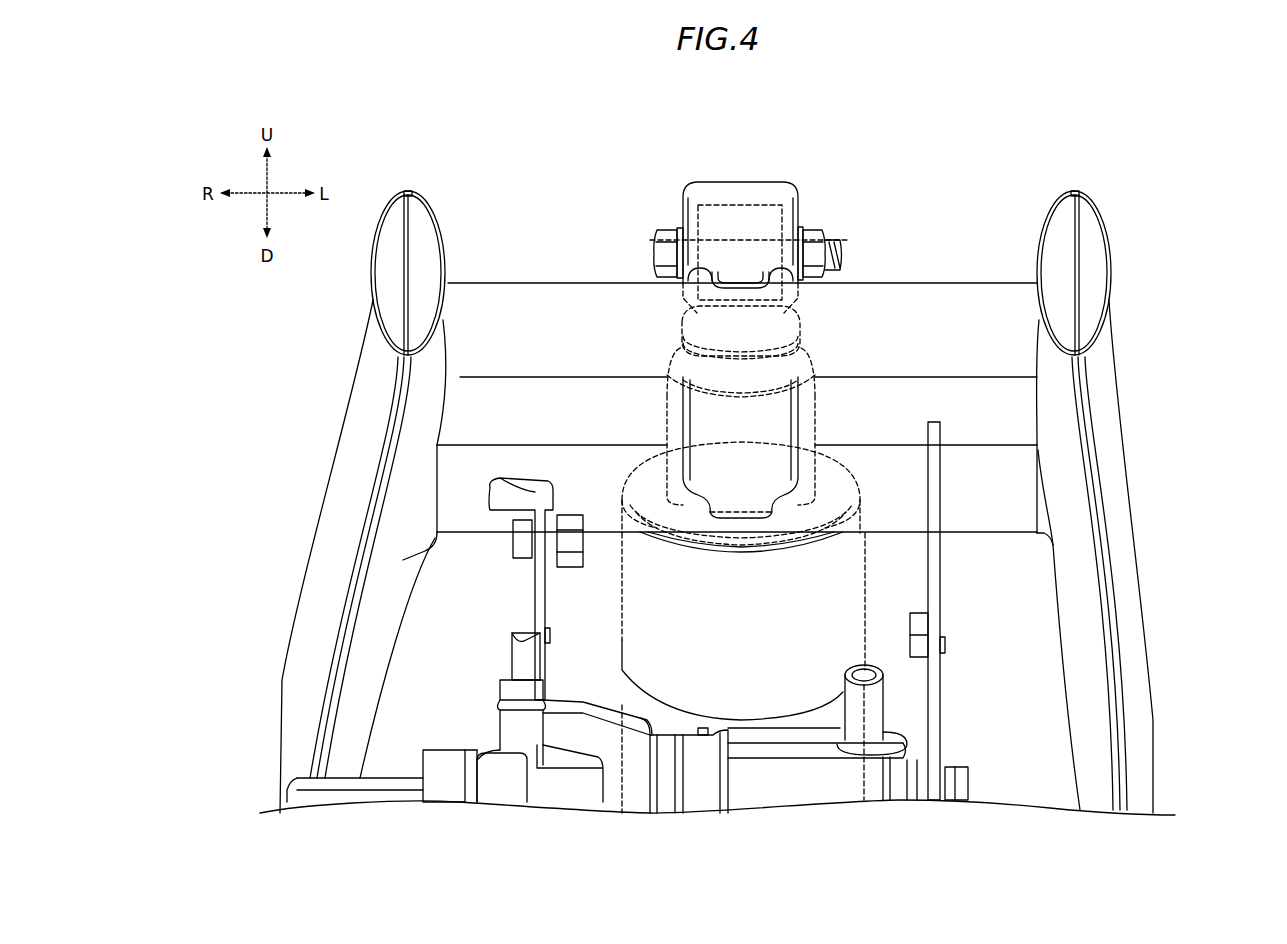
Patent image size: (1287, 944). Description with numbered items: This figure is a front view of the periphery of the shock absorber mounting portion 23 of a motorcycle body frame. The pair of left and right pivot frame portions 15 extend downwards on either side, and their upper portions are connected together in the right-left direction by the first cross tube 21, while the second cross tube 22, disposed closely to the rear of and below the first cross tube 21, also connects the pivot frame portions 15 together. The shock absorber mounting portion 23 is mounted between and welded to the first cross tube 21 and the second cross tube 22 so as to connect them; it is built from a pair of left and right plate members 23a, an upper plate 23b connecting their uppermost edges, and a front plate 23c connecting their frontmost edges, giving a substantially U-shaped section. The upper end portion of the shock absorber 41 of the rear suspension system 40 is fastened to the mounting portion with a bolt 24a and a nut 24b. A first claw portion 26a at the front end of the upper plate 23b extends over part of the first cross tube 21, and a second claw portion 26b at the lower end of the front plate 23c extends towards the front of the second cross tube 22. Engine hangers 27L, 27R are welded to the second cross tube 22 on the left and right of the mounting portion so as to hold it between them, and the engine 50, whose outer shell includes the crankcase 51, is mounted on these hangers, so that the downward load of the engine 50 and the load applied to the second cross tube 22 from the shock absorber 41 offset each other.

The pivot frame portion 15 is at (300, 668).
The first cross tube 21 is at (962, 312).
The second cross tube 22 is at (1000, 485).
The shock absorber mounting portion 23 is at (772, 182).
The plate member 23a is at (682, 407).
The upper plate 23b is at (740, 220).
The front plate 23c is at (750, 465).
The bolt 24a is at (667, 257).
The nut 24b is at (813, 257).
The first claw portion 26a is at (727, 280).
The second claw portion 26b is at (740, 520).
The engine hanger 27R is at (552, 540).
The engine hanger 27L is at (935, 575).
The rear suspension system 40 is at (691, 678).
The shock absorber 41 is at (762, 675).
The engine 50 is at (381, 776).
The crankcase 51 is at (500, 790).